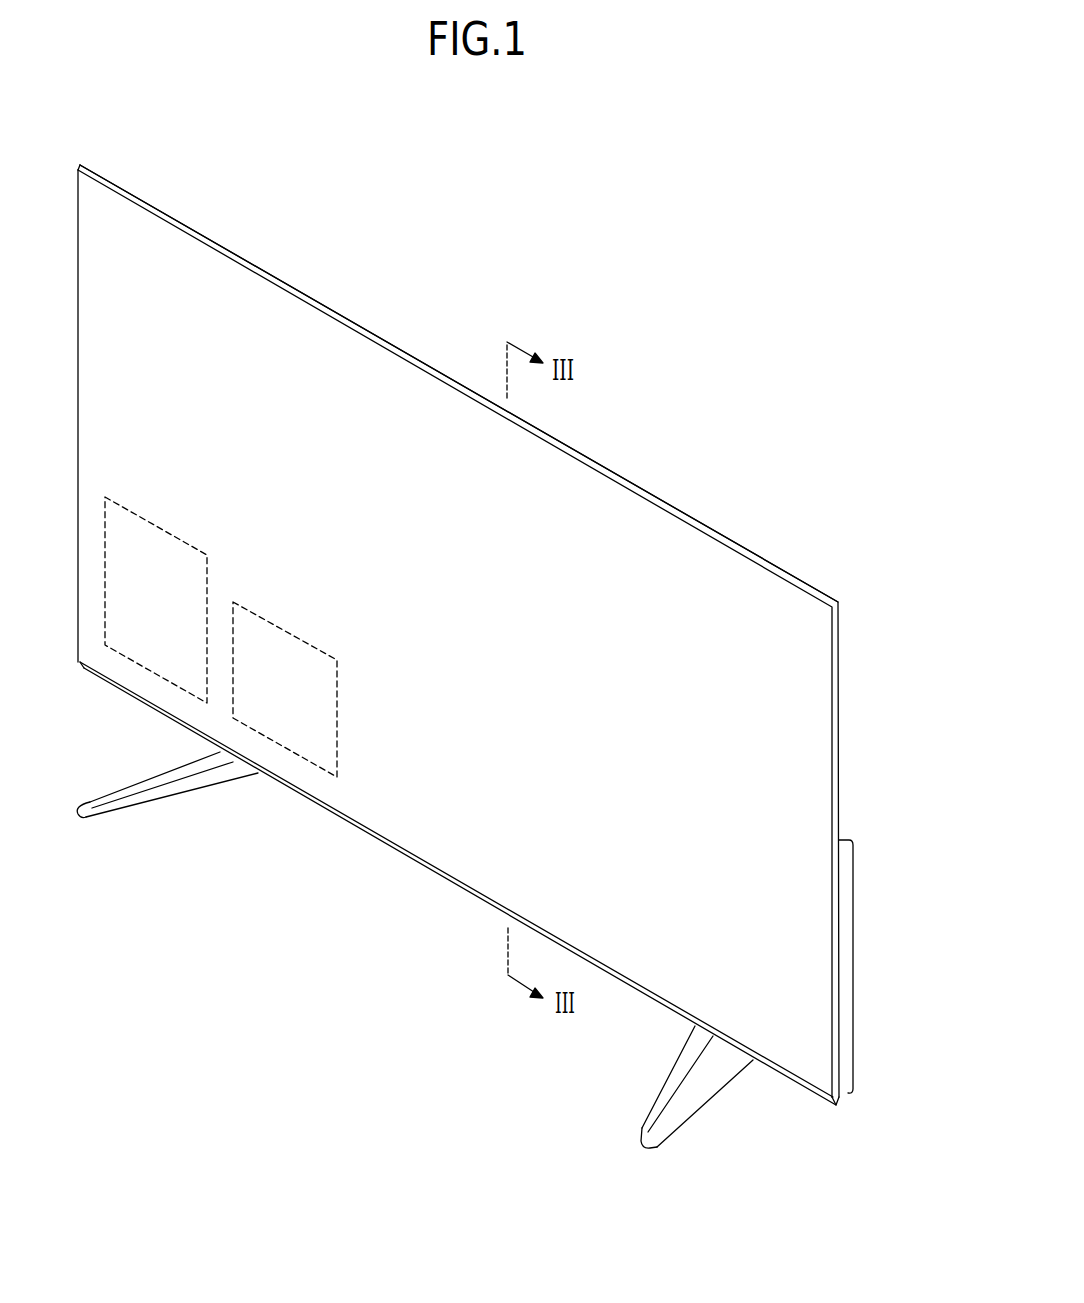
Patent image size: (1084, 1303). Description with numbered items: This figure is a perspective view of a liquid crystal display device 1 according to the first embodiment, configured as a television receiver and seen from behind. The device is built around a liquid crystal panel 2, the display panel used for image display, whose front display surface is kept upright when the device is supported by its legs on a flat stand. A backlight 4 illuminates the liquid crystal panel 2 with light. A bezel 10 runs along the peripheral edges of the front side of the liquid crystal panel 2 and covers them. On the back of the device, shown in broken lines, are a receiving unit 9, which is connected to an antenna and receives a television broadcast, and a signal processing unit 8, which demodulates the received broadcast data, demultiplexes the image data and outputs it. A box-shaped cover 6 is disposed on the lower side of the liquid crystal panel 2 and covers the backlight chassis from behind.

The liquid crystal display device 1 is at (795, 273).
The liquid crystal panel 2 is at (806, 777).
The backlight 4 is at (415, 293).
The cover 6 is at (850, 942).
The signal processing unit 8 is at (298, 753).
The receiving unit 9 is at (152, 672).
The bezel 10 is at (114, 183).